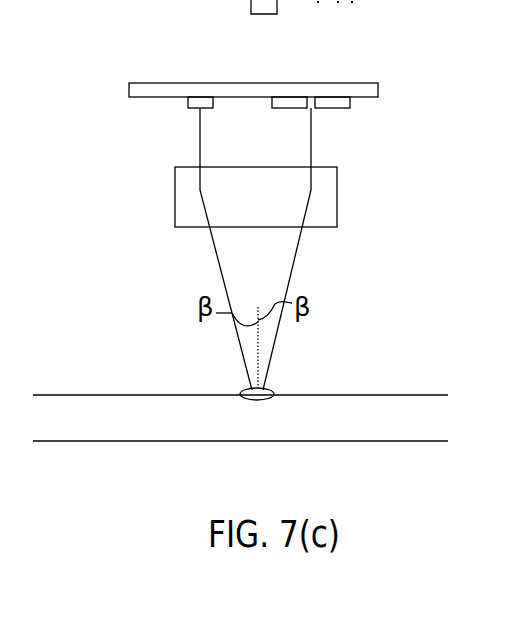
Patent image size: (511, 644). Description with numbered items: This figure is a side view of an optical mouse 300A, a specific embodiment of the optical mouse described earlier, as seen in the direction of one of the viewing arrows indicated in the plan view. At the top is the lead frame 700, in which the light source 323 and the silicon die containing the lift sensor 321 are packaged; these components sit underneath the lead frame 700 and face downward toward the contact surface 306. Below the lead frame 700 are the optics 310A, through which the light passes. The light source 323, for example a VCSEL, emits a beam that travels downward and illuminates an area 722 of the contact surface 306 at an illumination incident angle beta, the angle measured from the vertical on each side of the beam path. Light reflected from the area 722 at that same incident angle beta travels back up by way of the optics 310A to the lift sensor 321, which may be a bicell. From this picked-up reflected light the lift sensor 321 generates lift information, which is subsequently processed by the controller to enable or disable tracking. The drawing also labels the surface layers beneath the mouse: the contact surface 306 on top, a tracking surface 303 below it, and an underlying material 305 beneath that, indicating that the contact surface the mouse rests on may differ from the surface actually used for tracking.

The optical mouse 300A is at (250, 81).
The lead frame 700 is at (358, 83).
The light source 323 is at (180, 110).
The lift sensor 321 is at (342, 128).
The optics 310A is at (337, 195).
The area 722 is at (246, 389).
The contact surface 306 is at (362, 394).
The tracking surface layer 303 is at (350, 427).
The underlying material 305 is at (425, 440).